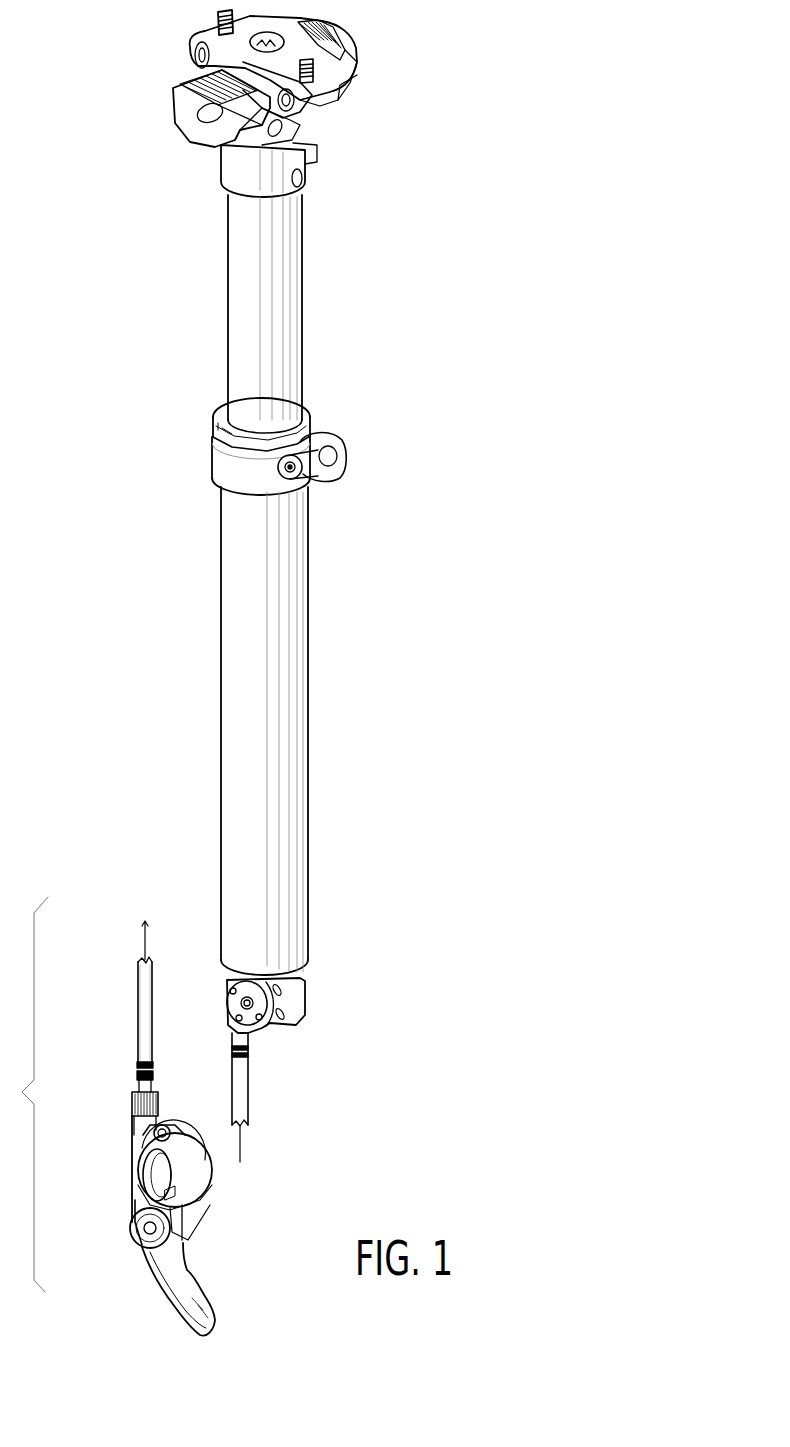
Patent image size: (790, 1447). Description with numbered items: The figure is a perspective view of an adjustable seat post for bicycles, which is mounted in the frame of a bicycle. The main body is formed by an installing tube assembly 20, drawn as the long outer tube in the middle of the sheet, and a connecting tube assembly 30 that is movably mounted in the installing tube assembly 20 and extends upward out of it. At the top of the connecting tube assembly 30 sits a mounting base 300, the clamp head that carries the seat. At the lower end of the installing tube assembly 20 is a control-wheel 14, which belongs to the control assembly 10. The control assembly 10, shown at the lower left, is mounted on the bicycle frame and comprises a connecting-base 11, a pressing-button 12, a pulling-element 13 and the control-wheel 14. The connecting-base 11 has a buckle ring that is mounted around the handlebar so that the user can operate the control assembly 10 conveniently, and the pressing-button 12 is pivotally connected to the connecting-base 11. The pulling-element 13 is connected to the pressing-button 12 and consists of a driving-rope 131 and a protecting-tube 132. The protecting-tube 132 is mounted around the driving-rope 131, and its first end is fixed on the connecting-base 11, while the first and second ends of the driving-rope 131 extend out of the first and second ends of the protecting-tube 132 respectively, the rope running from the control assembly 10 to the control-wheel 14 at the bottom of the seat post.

The mounting base 300 is at (292, 42).
The connecting tube assembly 30 is at (314, 292).
The installing tube assembly 20 is at (315, 628).
The control-wheel 14 is at (276, 1005).
The control assembly 10 is at (131, 1143).
The connecting-base 11 is at (200, 1178).
The pressing-button 12 is at (183, 1292).
The pulling-element 13 is at (143, 1040).
The driving-rope 131 is at (241, 1137).
The protecting-tube 132 is at (145, 982).